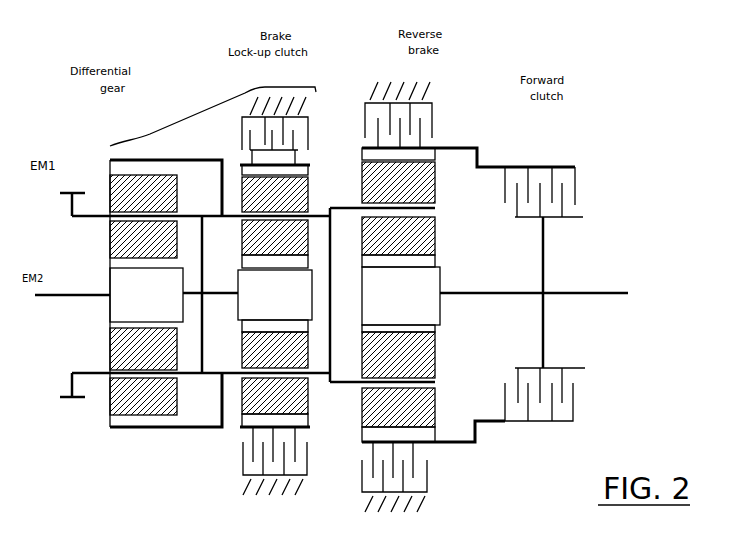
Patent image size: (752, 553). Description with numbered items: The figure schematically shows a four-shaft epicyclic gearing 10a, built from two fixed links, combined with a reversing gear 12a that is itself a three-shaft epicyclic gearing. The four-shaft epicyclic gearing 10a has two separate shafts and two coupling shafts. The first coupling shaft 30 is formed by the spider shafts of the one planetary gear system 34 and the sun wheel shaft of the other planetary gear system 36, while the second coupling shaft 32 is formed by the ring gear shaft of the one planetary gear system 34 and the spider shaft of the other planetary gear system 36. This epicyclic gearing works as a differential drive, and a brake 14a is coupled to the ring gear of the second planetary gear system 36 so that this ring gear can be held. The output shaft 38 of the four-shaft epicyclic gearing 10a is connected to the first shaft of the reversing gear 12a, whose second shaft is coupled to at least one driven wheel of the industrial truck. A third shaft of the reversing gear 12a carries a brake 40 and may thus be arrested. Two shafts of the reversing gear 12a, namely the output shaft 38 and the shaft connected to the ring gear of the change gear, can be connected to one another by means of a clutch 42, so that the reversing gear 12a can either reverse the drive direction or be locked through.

The four-shaft epicyclic gearing 10a is at (212, 112).
The reversing gear 12a is at (586, 138).
The brake 14a is at (308, 458).
The first coupling shaft 30 is at (95, 220).
The second coupling shaft 32 is at (187, 158).
The one planetary gear system 34 is at (108, 404).
The other planetary gear system 36 is at (243, 428).
The output shaft 38 is at (581, 290).
The brake 40 is at (428, 480).
The clutch 42 is at (575, 390).